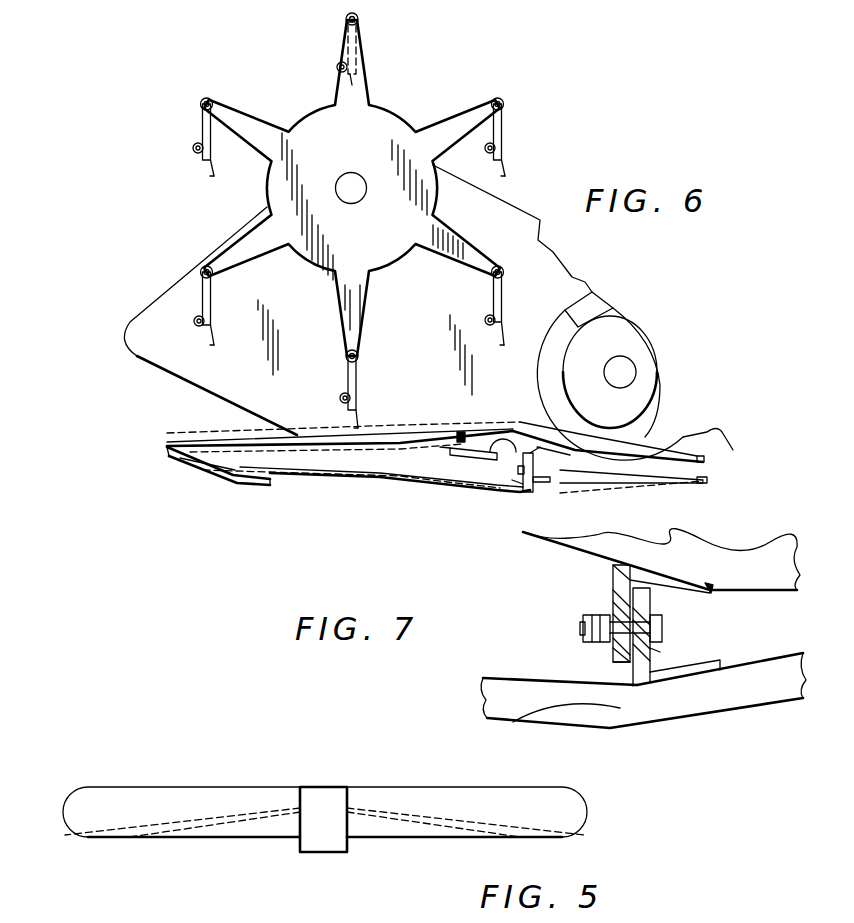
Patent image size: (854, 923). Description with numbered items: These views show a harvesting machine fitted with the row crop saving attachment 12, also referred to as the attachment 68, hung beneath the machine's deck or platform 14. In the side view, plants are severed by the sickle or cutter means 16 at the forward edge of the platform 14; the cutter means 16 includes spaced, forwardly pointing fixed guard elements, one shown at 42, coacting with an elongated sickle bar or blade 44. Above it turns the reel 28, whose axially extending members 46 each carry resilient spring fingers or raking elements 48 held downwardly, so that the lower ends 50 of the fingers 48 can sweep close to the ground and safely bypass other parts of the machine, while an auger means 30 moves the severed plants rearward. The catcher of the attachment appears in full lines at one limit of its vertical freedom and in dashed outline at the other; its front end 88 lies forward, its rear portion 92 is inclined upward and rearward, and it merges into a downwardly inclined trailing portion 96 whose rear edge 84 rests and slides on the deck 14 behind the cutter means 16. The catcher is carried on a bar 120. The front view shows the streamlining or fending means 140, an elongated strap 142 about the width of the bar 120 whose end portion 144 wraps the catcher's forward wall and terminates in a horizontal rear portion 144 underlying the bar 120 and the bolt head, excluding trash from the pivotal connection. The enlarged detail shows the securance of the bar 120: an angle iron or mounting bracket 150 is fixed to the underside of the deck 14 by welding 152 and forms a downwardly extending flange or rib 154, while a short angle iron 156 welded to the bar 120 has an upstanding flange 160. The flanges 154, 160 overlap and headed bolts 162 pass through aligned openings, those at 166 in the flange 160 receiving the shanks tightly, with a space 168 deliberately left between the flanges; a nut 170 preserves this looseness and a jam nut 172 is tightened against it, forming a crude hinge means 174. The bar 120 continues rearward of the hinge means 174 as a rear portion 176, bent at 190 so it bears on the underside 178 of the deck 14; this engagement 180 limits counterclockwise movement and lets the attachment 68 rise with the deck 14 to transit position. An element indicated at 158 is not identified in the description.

In FIG. 6, the row crop saving attachment 12 is at (391, 491).
In FIG. 6, the deck or platform 14 is at (594, 465).
In FIG. 7, the deck or platform 14 is at (782, 587).
In FIG. 6, the sickle or cutter means 16 is at (458, 432).
In FIG. 6, the reel 28 is at (350, 110).
In FIG. 6, the auger means 30 is at (560, 327).
In FIG. 6, the guard element 42 is at (463, 450).
In FIG. 6, the sickle bar or blade 44 is at (490, 450).
In FIG. 6, the axially extending members 46 is at (362, 19).
In FIG. 6, the spring fingers or raking elements 48 is at (342, 62).
In FIG. 6, the lower ends of the fingers 50 is at (207, 178).
In FIG. 6, the rear edge 84 is at (537, 450).
In FIG. 6, the front end 88 is at (372, 478).
In FIG. 6, the rear portion 92 is at (392, 500).
In FIG. 6, the trailing portion 96 is at (525, 437).
In FIG. 7, the bar 120 is at (553, 712).
In FIG. 5, the streamlining or fending means 140 is at (290, 849).
In FIG. 5, the elongated strap 142 is at (317, 813).
In FIG. 5, the strap end portion 144 is at (325, 853).
In FIG. 7, the angle iron or mounting bracket 150 is at (712, 592).
In FIG. 7, the welding 152 is at (708, 585).
In FIG. 7, the downwardly extending flange or rib 154 is at (617, 660).
In FIG. 7, the angle iron 156 is at (700, 662).
In FIG. 7, the lower beam section 158 is at (740, 665).
In FIG. 7, the upstanding flange 160 is at (643, 598).
In FIG. 7, the headed bolts 162 is at (657, 632).
In FIG. 7, the openings 166 is at (647, 655).
In FIG. 7, the space 168 is at (630, 588).
In FIG. 7, the nut 170 is at (603, 615).
In FIG. 7, the jam nut 172 is at (587, 637).
In FIG. 6, the hinge means 174 is at (510, 486).
In FIG. 7, the hinge means 174 is at (662, 658).
In FIG. 6, the rear portion of the bar 176 is at (697, 478).
In FIG. 6, the underside of the deck 178 is at (652, 465).
In FIG. 6, the engagement 180 is at (665, 460).
In FIG. 6, the bend 190 is at (528, 494).
In FIG. 7, the bend 190 is at (523, 720).
In FIG. 5, the attachment 68 is at (63, 781).